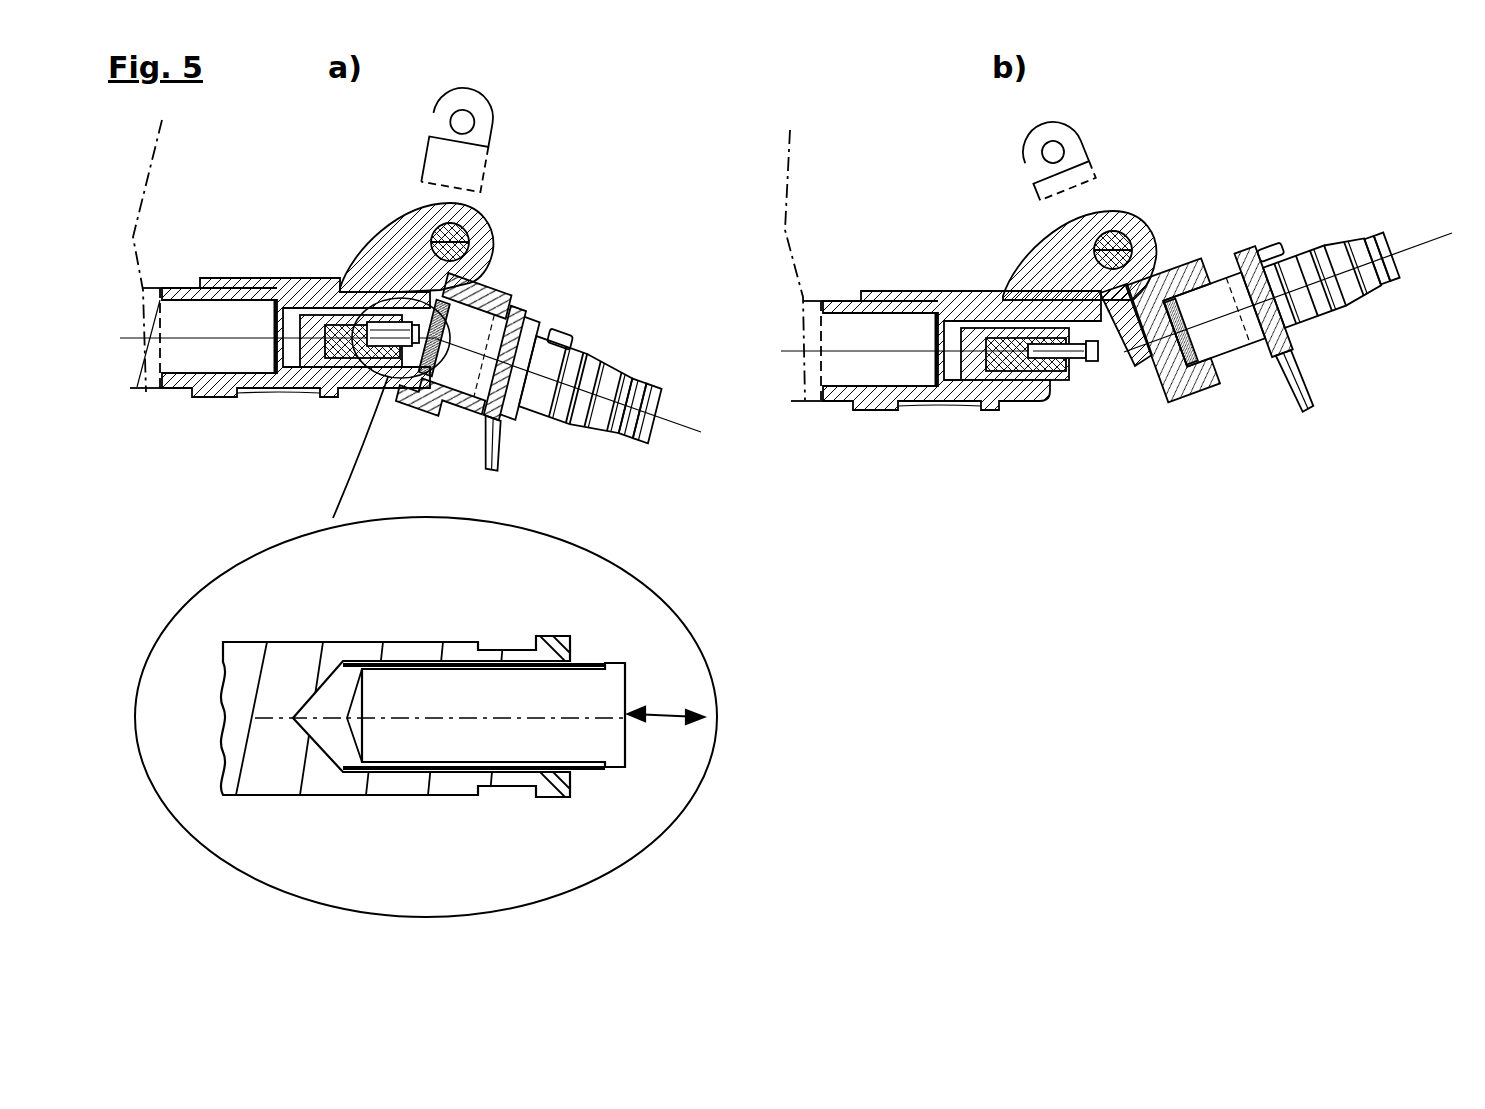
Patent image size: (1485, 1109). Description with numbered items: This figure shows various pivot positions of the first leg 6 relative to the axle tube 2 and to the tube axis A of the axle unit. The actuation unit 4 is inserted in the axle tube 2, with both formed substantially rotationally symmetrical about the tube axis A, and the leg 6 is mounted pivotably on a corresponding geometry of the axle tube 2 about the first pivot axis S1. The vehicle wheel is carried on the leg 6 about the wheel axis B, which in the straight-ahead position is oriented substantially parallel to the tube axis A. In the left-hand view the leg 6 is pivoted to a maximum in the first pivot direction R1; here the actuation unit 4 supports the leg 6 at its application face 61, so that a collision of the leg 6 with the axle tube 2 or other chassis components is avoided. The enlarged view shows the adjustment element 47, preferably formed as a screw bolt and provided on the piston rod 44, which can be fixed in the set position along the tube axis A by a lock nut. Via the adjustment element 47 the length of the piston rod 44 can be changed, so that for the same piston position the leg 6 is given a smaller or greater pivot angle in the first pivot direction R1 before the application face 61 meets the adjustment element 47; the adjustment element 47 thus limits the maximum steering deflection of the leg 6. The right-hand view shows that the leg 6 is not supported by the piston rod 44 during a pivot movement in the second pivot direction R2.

The tube axis A is at (234, 339).
The axle tube 2 is at (200, 382).
The actuation unit 4 is at (343, 315).
The first pivot axis S1 is at (455, 238).
The first leg 6 is at (490, 313).
The first application face 61 is at (1150, 367).
The wheel axis B is at (672, 432).
The first pivot direction R1 is at (665, 447).
The second pivot direction R2 is at (724, 320).
The piston rod 44 is at (270, 764).
The adjustment element 47 is at (573, 692).